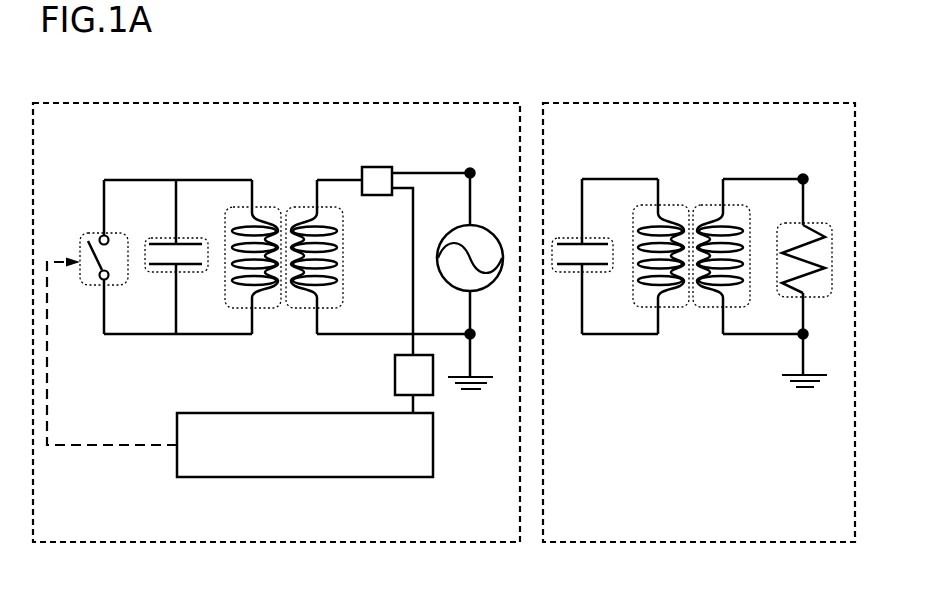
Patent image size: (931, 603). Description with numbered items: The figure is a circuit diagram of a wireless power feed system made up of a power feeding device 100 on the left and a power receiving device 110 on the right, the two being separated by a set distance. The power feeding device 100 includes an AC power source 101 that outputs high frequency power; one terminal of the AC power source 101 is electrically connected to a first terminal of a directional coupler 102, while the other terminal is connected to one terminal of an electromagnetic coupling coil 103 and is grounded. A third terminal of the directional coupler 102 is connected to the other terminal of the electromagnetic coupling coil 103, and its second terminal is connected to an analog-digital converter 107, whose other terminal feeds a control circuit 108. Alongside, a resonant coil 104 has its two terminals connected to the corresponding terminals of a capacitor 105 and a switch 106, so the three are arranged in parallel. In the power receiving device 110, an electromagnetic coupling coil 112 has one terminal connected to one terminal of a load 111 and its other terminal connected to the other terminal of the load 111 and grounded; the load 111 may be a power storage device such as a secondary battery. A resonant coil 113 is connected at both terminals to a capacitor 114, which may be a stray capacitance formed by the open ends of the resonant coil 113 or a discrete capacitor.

The power feeding device 100 is at (92, 525).
The AC power source 101 is at (490, 223).
The directional coupler 102 is at (374, 167).
The electromagnetic coupling coil 103 is at (300, 207).
The resonant coil 104 is at (268, 207).
The capacitor 105 is at (190, 238).
The switch 106 is at (117, 233).
The analog-digital converter 107 is at (395, 376).
The control circuit 108 is at (305, 445).
The power receiving device 110 is at (787, 522).
The load 111 is at (818, 223).
The electromagnetic coupling coil 112 is at (712, 205).
The resonant coil 113 is at (677, 205).
The capacitor 114 is at (570, 238).